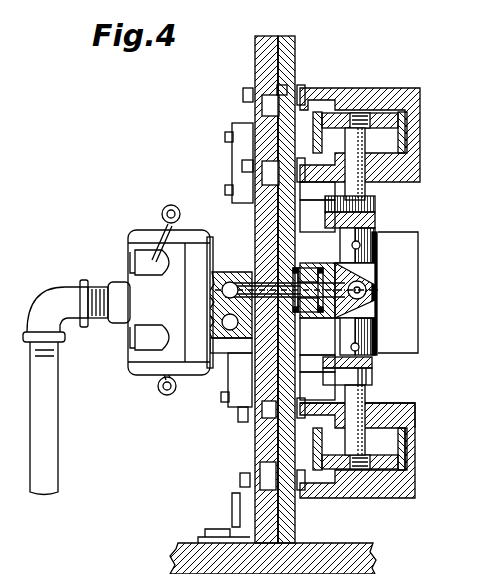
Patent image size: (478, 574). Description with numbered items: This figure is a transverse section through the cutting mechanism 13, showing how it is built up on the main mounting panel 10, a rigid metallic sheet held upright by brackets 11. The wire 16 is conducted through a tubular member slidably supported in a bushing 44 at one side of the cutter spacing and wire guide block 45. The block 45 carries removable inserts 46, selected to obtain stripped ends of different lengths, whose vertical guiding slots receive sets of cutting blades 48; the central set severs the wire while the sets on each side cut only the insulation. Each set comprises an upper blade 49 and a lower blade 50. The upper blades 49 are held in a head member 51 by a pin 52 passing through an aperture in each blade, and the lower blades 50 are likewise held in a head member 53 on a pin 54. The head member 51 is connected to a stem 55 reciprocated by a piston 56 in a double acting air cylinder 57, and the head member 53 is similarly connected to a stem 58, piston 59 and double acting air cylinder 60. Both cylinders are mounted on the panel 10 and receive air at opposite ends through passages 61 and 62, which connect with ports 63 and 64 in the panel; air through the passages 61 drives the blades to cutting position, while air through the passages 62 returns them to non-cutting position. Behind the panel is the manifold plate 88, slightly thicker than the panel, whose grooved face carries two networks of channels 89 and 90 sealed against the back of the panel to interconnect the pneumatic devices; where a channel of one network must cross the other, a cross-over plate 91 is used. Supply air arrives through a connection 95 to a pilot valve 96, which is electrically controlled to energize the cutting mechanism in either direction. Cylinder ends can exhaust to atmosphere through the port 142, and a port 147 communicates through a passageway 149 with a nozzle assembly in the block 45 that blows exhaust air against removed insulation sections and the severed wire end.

The main mounting panel 10 is at (290, 52).
The brackets 11 is at (236, 530).
The cutting mechanism 13 is at (427, 274).
The wire 16 is at (372, 300).
The bushing 44 is at (368, 290).
The cutter spacing and wire guide block 45 is at (317, 336).
The removable inserts 46 is at (332, 266).
The cutting blades 48 is at (386, 255).
The upper blade 49 is at (376, 222).
The lower blade 50 is at (378, 338).
The head member 51 is at (376, 206).
The pin 52 is at (394, 247).
The head member 53 is at (374, 368).
The pin 54 is at (378, 356).
The stem 55 is at (380, 196).
The piston 56 is at (406, 138).
The double acting air cylinder 57 is at (410, 122).
The stem 58 is at (370, 400).
The piston 59 is at (398, 462).
The double acting air cylinder 60 is at (410, 472).
The passages 61 is at (336, 95).
The passages 62 is at (317, 291).
The ports 63 is at (290, 84).
The ports 64 is at (317, 286).
The manifold plate 88 is at (265, 46).
The channel network 89 is at (256, 174).
The channel network 90 is at (243, 110).
The cross-over plate 91 is at (232, 140).
The connection 95 is at (48, 404).
The pilot valve 96 is at (148, 250).
The port 142 is at (181, 373).
The port 147 is at (240, 270).
The passageway 149 is at (238, 402).